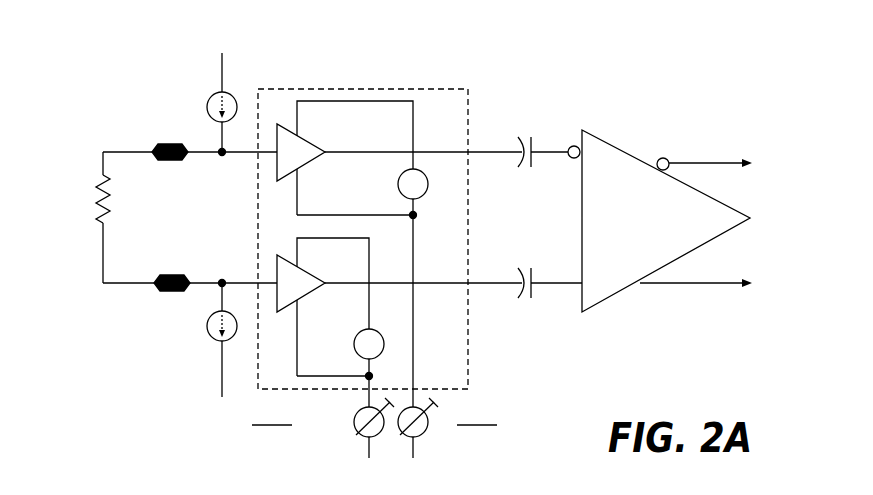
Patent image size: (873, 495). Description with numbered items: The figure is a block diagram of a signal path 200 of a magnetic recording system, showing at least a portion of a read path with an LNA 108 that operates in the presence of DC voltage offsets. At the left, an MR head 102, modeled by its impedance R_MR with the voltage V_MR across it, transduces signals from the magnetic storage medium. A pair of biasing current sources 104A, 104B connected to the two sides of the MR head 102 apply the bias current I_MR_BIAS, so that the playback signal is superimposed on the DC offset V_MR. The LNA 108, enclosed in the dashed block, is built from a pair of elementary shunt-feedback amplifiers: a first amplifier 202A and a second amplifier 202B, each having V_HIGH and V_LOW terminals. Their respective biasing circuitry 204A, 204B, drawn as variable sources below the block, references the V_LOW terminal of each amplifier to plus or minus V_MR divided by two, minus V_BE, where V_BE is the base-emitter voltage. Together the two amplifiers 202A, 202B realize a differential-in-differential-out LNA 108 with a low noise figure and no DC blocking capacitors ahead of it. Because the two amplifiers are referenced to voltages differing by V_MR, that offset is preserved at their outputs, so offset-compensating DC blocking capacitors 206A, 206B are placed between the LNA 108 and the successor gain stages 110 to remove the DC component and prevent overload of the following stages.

The signal path 200 is at (160, 38).
The MR head 102 is at (103, 158).
The biasing current source 104A is at (226, 93).
The biasing current source 104B is at (208, 330).
The LNA 108 is at (428, 88).
The first amplifier 202A is at (282, 128).
The second amplifier 202B is at (277, 260).
The biasing circuitry 204A is at (418, 440).
The biasing circuitry 204B is at (365, 440).
The DC blocking capacitor 206A is at (536, 138).
The DC blocking capacitor 206B is at (537, 299).
The successor gain stages 110 is at (620, 146).